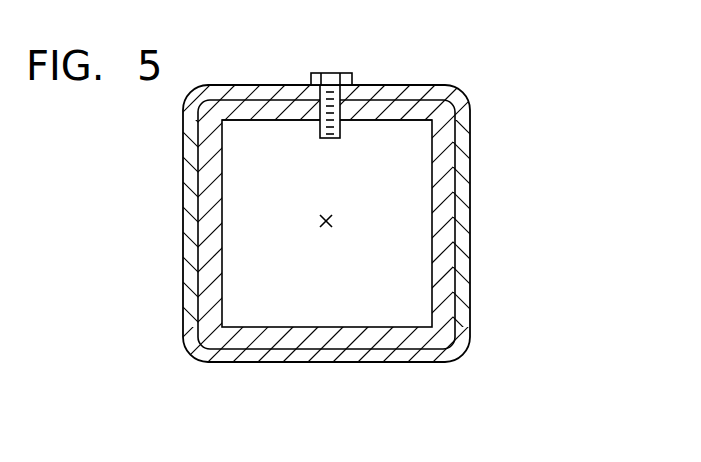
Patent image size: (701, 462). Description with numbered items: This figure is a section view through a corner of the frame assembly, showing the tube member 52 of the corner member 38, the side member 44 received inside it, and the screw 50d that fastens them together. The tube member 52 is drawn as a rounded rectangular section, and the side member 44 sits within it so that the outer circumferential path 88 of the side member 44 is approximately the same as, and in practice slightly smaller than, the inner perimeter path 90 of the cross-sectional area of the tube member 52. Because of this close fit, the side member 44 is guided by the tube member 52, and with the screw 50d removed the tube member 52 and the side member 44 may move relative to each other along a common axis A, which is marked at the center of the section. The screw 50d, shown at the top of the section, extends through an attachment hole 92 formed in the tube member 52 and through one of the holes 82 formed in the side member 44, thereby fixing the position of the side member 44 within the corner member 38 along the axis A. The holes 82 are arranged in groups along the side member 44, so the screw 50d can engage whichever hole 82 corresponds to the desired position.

The corner member 38 is at (472, 152).
The tube member 52 is at (430, 90).
The inner perimeter path 90 is at (454, 229).
The outer circumferential path 88 is at (452, 183).
The side member 44 is at (400, 115).
The holes 82 is at (304, 122).
The screw 50d is at (310, 77).
The attachment hole 92 is at (350, 90).
The common axis A is at (326, 230).